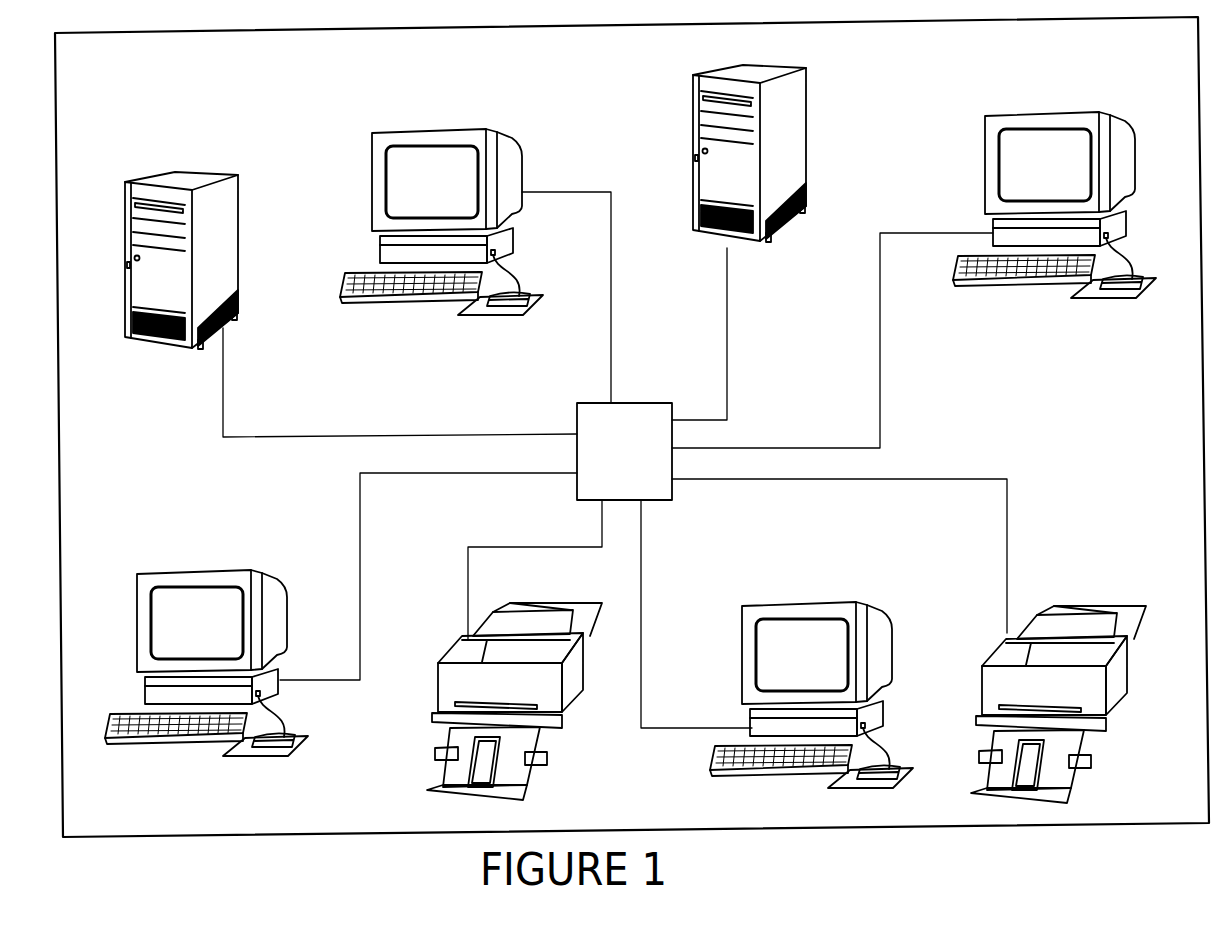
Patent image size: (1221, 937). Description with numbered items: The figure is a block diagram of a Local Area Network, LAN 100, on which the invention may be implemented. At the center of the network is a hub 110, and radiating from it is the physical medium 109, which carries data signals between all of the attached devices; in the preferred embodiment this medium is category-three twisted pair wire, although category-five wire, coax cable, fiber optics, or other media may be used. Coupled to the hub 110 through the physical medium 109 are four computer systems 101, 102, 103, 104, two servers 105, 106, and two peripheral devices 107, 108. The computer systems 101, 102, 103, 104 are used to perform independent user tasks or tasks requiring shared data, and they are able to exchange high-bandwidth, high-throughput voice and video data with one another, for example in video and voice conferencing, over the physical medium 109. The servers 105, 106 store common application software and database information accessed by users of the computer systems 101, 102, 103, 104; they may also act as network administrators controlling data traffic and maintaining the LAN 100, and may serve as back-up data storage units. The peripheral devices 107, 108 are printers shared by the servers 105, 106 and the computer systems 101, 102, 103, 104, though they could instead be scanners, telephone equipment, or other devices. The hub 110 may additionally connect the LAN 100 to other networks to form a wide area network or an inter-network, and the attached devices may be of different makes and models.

The Local Area Network (LAN) 100 is at (632, 427).
The computer system 101 is at (499, 139).
The computer system 102 is at (1128, 138).
The computer system 103 is at (280, 595).
The computer system 104 is at (871, 612).
The server 105 is at (244, 190).
The server 106 is at (816, 90).
The peripheral device 107 is at (583, 665).
The peripheral device 108 is at (1127, 665).
The physical medium 109 is at (770, 445).
The hub 110 is at (624, 453).